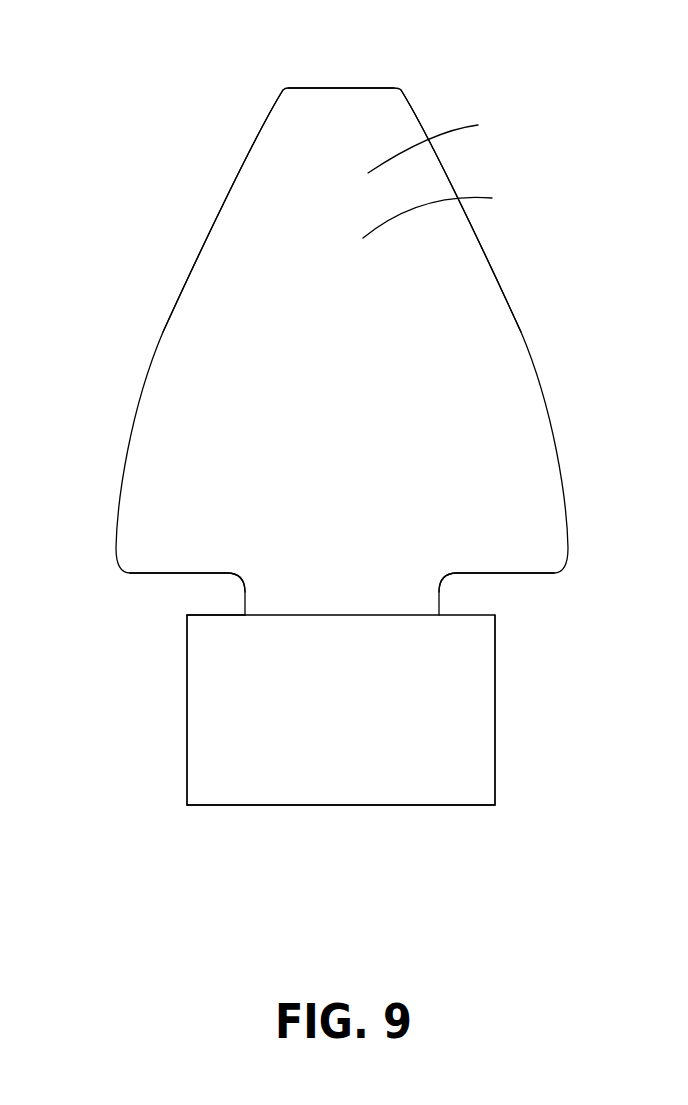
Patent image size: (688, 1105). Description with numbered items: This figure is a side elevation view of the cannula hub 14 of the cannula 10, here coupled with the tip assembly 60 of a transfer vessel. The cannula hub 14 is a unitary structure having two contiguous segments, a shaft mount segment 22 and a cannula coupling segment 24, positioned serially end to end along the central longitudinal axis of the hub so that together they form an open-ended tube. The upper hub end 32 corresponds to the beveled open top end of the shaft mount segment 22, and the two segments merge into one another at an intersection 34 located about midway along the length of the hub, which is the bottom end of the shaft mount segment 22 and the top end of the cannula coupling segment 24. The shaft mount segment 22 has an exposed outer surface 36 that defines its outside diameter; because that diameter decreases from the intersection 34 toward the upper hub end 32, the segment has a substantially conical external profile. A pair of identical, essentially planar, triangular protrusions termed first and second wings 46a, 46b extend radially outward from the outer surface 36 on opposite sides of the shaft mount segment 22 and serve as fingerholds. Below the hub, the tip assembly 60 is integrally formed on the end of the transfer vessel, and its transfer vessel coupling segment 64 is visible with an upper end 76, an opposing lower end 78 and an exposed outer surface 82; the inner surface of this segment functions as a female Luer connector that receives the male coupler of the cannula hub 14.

The cannula 10 is at (342, 73).
The cannula hub 14 is at (163, 332).
The shaft mount segment 22 is at (442, 142).
The cannula coupling segment 24 is at (441, 594).
The upper hub end 32 is at (372, 88).
The intersection 34 is at (237, 580).
The outer surface 36 is at (445, 211).
The first wing 46a is at (532, 365).
The second wing 46b is at (243, 150).
The tip assembly 60 is at (496, 706).
The transfer vessel coupling segment 64 is at (187, 762).
The upper end 76 is at (207, 614).
The lower end 78 is at (205, 806).
The outer surface 82 is at (467, 778).